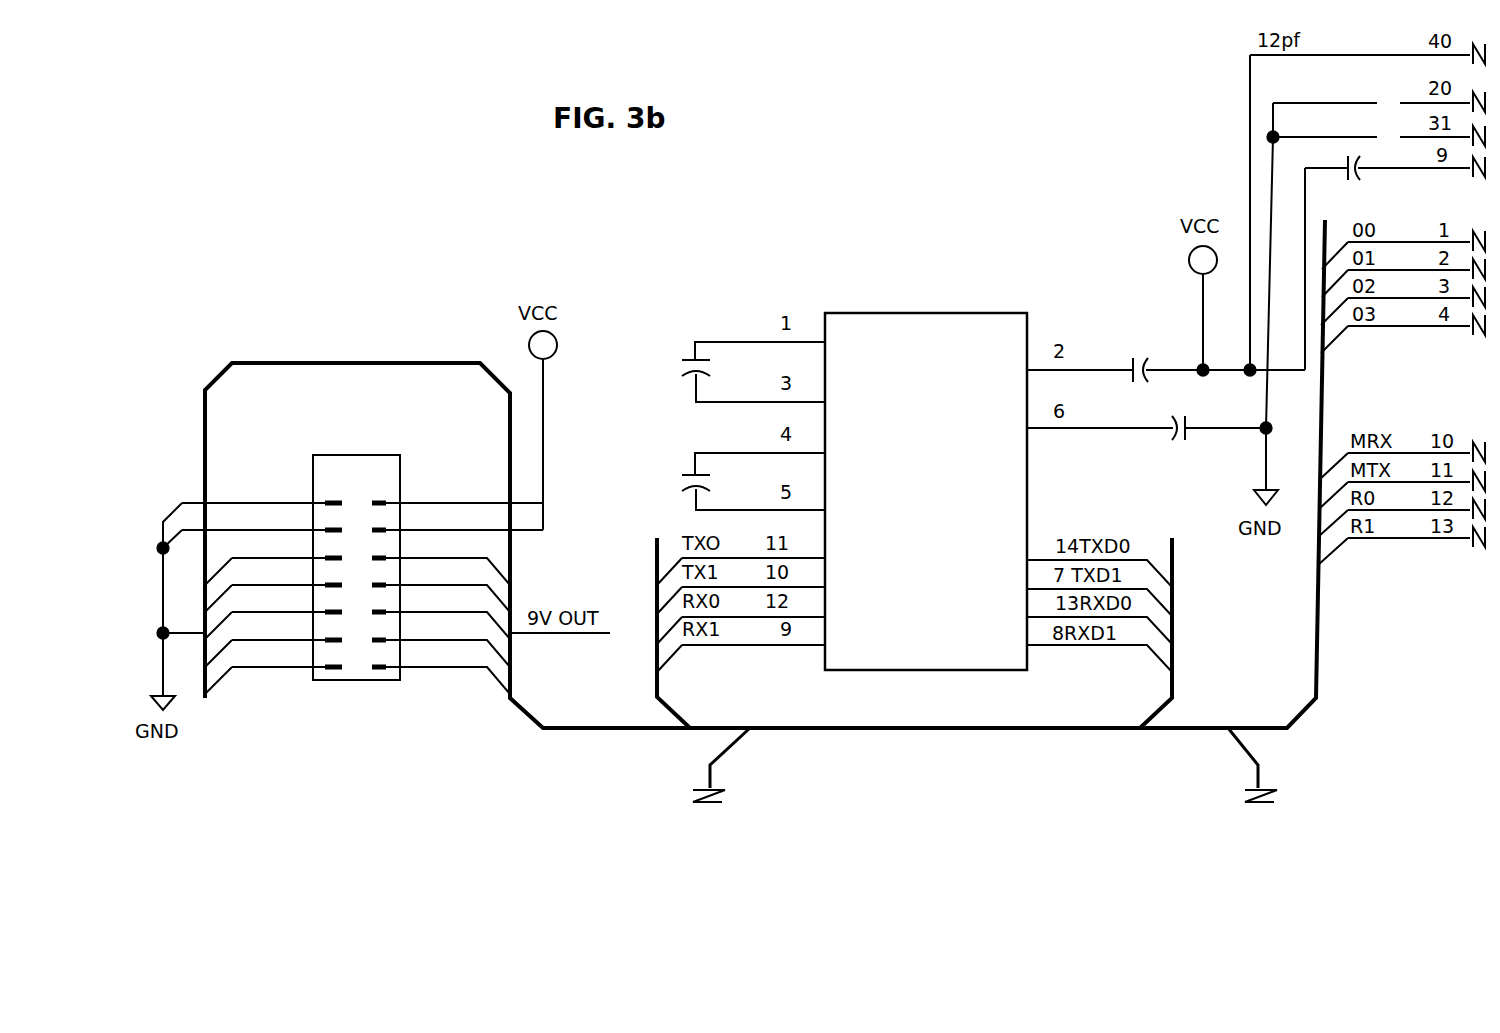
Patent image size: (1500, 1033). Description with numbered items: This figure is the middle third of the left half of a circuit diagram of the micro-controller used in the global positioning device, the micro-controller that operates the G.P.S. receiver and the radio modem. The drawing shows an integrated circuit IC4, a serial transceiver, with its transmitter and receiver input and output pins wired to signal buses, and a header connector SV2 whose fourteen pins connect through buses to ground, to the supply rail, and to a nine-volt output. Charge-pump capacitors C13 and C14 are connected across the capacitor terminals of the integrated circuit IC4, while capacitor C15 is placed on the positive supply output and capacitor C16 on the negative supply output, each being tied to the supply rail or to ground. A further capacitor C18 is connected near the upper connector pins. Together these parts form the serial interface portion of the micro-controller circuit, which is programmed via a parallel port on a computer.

The MAX232 RS-232 transceiver IC4 is at (926, 491).
The ML14 header connector SV2 is at (356, 570).
The 1.0uf charge pump capacitor C13 is at (718, 367).
The 1.0uf charge pump capacitor C14 is at (718, 476).
The 1.0uf V+ capacitor C15 is at (1166, 343).
The 1.0uf V- capacitor C16 is at (1146, 457).
The CAP-10 capacitor C18 is at (1371, 113).